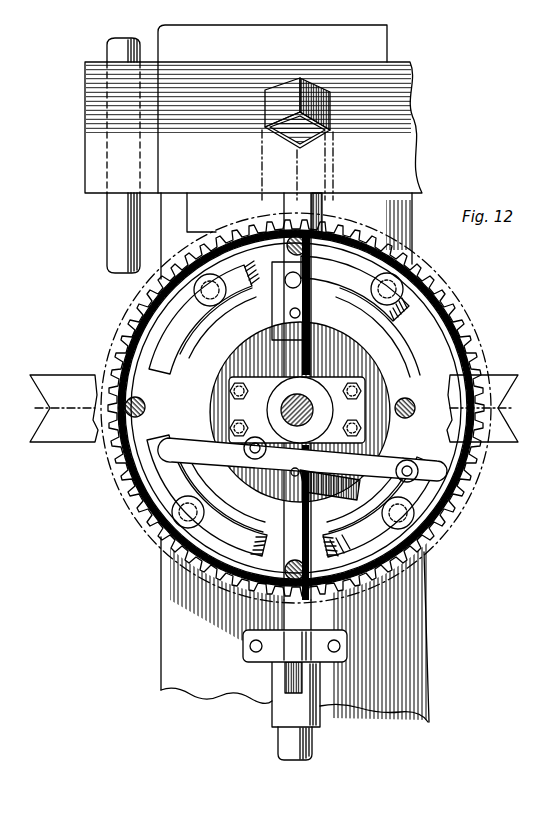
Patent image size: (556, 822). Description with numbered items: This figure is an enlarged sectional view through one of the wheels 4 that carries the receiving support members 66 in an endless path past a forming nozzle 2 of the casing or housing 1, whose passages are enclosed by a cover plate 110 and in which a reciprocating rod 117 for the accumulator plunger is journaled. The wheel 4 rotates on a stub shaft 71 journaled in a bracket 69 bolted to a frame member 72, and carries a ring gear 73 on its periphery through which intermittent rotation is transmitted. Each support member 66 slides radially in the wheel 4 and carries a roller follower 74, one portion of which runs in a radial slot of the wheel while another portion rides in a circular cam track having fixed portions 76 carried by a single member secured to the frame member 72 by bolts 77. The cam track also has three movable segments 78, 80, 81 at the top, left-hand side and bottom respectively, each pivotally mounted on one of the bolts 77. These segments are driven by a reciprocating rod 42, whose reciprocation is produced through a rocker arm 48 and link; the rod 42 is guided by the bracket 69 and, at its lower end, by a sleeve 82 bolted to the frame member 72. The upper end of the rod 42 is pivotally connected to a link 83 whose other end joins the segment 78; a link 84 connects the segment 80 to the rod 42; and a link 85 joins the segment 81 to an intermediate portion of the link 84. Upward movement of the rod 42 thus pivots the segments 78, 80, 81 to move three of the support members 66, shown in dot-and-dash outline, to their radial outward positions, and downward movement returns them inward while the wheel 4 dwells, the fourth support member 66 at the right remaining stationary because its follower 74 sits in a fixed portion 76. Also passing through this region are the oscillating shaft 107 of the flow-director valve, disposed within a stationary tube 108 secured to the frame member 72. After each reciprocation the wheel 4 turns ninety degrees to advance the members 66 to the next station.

The casing or housing 1 is at (392, 142).
The forming aperture or nozzle 2 is at (286, 92).
The wheel 4 is at (457, 324).
The reciprocating rod 42 is at (290, 684).
The rocker arm 48 is at (290, 358).
The support member 66 is at (262, 155).
The bracket 69 is at (328, 383).
The stub shaft 71 is at (284, 410).
The frame member 72 is at (413, 240).
The ring gear 73 is at (178, 262).
The roller follower 74 is at (286, 248).
The fixed portions of the cam track 76 is at (236, 290).
The bolts 77 is at (194, 297).
The movable segment 78 is at (348, 272).
The movable segment 80 is at (150, 356).
The movable segment 81 is at (426, 557).
The sleeve 82 is at (250, 658).
The link 83 is at (276, 296).
The link 84 is at (200, 447).
The link 85 is at (318, 494).
The oscillating shaft 107 is at (284, 746).
The stationary tube 108 is at (324, 212).
The cover plate 110 is at (388, 45).
The reciprocating rod 117 is at (118, 45).